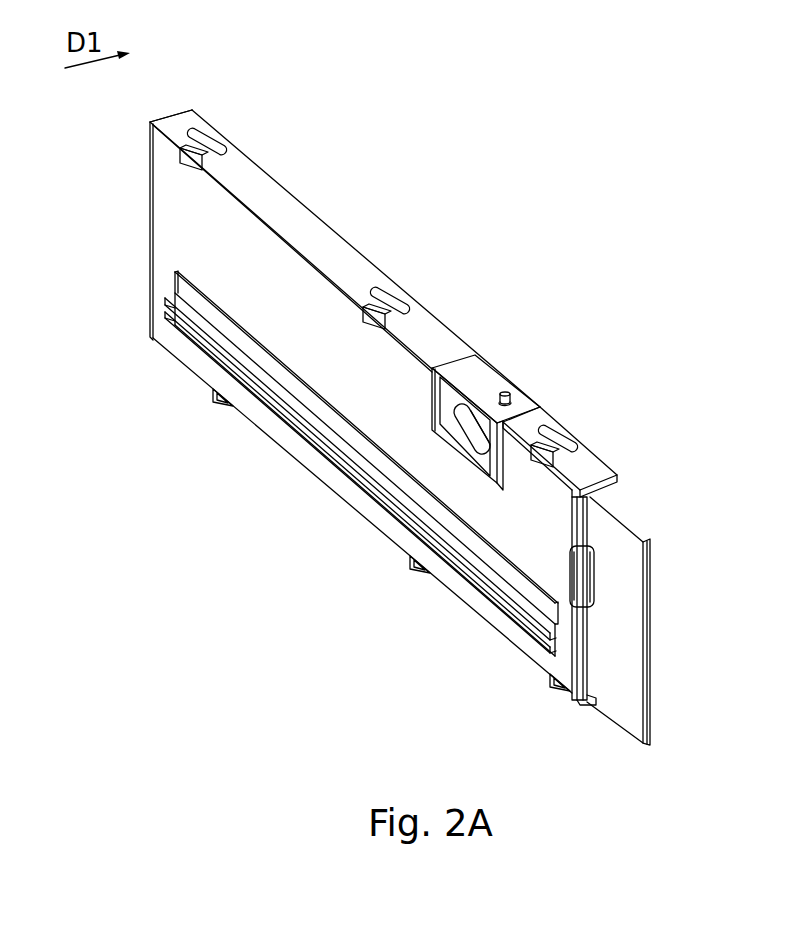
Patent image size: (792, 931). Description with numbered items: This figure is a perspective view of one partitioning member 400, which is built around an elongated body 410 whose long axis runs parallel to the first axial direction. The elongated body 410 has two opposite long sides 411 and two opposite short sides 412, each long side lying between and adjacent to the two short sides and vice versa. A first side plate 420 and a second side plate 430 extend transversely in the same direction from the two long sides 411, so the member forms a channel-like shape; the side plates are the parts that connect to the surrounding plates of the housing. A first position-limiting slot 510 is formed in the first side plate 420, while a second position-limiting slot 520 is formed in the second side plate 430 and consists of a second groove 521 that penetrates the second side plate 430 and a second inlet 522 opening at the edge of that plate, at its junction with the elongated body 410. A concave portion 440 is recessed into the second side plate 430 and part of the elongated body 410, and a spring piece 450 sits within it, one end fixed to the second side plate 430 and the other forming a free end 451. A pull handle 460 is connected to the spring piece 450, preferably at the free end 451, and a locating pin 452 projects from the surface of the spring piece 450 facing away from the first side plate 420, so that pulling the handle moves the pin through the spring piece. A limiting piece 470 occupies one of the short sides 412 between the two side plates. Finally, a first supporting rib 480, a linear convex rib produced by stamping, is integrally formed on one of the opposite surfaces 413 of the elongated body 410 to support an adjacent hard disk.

The partitioning member 400 is at (746, 82).
The elongated body 410 is at (148, 280).
The long side 411 is at (248, 206).
The short side 412 is at (150, 190).
The surface 413 is at (195, 240).
The first side plate 420 is at (587, 702).
The second side plate 430 is at (263, 182).
The concave portion 440 is at (478, 459).
The spring piece 450 is at (480, 373).
The free end 451 is at (522, 412).
The locating pin 452 is at (506, 395).
The pull handle 460 is at (450, 408).
The limiting piece 470 is at (647, 698).
The first supporting rib 480 is at (318, 418).
The first position-limiting slot 510 is at (222, 400).
The second position-limiting slot 520 is at (528, 214).
The second groove 521 is at (382, 292).
The second inlet 522 is at (383, 328).